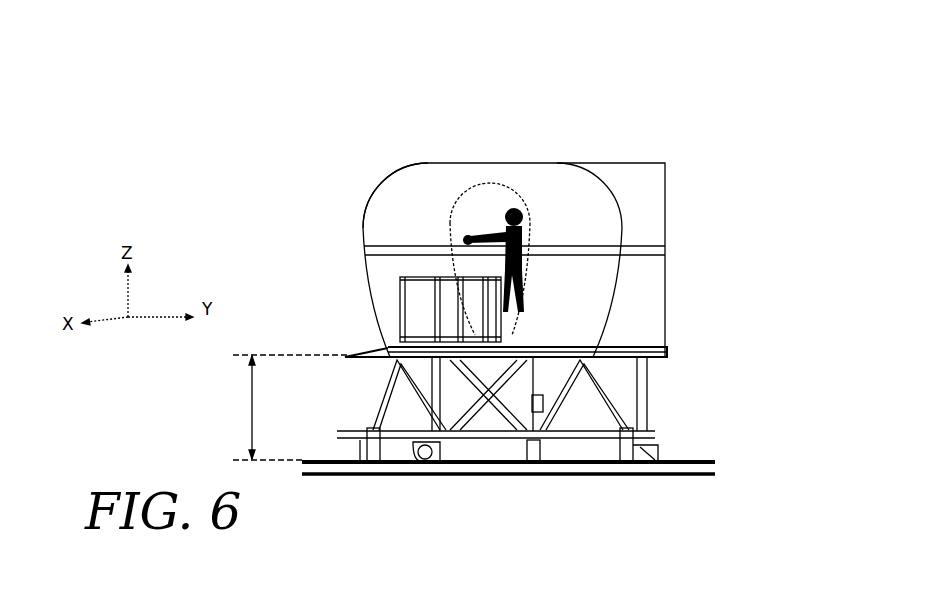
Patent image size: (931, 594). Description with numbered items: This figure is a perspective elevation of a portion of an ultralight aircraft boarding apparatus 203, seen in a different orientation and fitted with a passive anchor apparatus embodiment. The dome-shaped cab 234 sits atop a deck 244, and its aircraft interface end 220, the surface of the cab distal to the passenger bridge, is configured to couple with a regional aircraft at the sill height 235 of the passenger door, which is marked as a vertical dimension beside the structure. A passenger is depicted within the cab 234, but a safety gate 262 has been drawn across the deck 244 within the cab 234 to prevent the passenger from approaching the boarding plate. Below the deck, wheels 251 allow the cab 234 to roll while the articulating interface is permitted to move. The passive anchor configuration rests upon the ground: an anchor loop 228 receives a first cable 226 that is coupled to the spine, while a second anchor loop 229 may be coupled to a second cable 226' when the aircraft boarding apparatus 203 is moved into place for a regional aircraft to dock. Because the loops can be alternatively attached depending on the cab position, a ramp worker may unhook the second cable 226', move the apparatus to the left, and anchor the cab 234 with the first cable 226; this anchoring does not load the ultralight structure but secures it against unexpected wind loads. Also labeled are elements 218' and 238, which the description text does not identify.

The aircraft boarding apparatus 203 is at (660, 65).
The enclosure in second position 218' is at (525, 223).
The cab 234 is at (487, 158).
The aircraft interface end 220 is at (362, 243).
The safety gate 262 is at (413, 277).
The platform 238 is at (350, 354).
The deck 244 is at (613, 345).
The sill height 235 is at (252, 402).
The first cable 226 is at (343, 436).
The second cable 226' is at (658, 436).
The wheels 251 is at (413, 450).
The anchor loop 228 is at (370, 452).
The anchor loop 229 is at (695, 456).